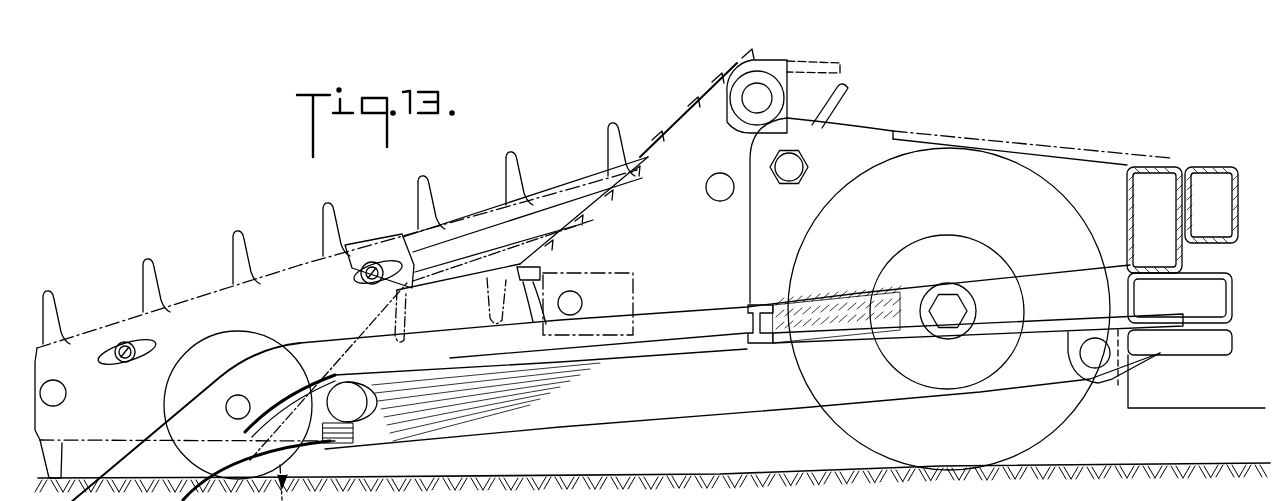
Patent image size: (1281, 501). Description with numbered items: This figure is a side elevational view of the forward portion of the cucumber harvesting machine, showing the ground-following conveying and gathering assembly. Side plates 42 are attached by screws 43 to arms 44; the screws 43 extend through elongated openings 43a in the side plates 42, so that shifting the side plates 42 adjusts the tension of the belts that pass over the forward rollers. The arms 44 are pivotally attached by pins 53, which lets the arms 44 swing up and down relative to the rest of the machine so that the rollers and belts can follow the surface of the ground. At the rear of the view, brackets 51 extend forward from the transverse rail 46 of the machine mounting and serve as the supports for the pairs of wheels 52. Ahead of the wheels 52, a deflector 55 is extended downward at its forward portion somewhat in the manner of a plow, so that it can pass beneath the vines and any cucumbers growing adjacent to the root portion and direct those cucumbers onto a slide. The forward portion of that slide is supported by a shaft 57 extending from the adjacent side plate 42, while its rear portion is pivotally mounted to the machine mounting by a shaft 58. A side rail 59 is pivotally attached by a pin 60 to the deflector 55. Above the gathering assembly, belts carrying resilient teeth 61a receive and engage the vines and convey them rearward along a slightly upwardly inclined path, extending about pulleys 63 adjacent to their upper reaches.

The side plates 42 is at (297, 293).
The screws 43 is at (118, 338).
The elongated openings 43a is at (349, 276).
The arms 44 is at (487, 228).
The transverse rail 46 is at (1165, 165).
The brackets 51 is at (1088, 168).
The wheels 52 is at (865, 433).
The pins 53 is at (712, 200).
The deflector 55 is at (265, 370).
The shaft 57 is at (355, 410).
The shaft 58 is at (1097, 360).
The side rail 59 is at (773, 343).
The pin 60 is at (758, 288).
The resilient teeth 61a is at (660, 133).
The pulleys 63 is at (742, 97).